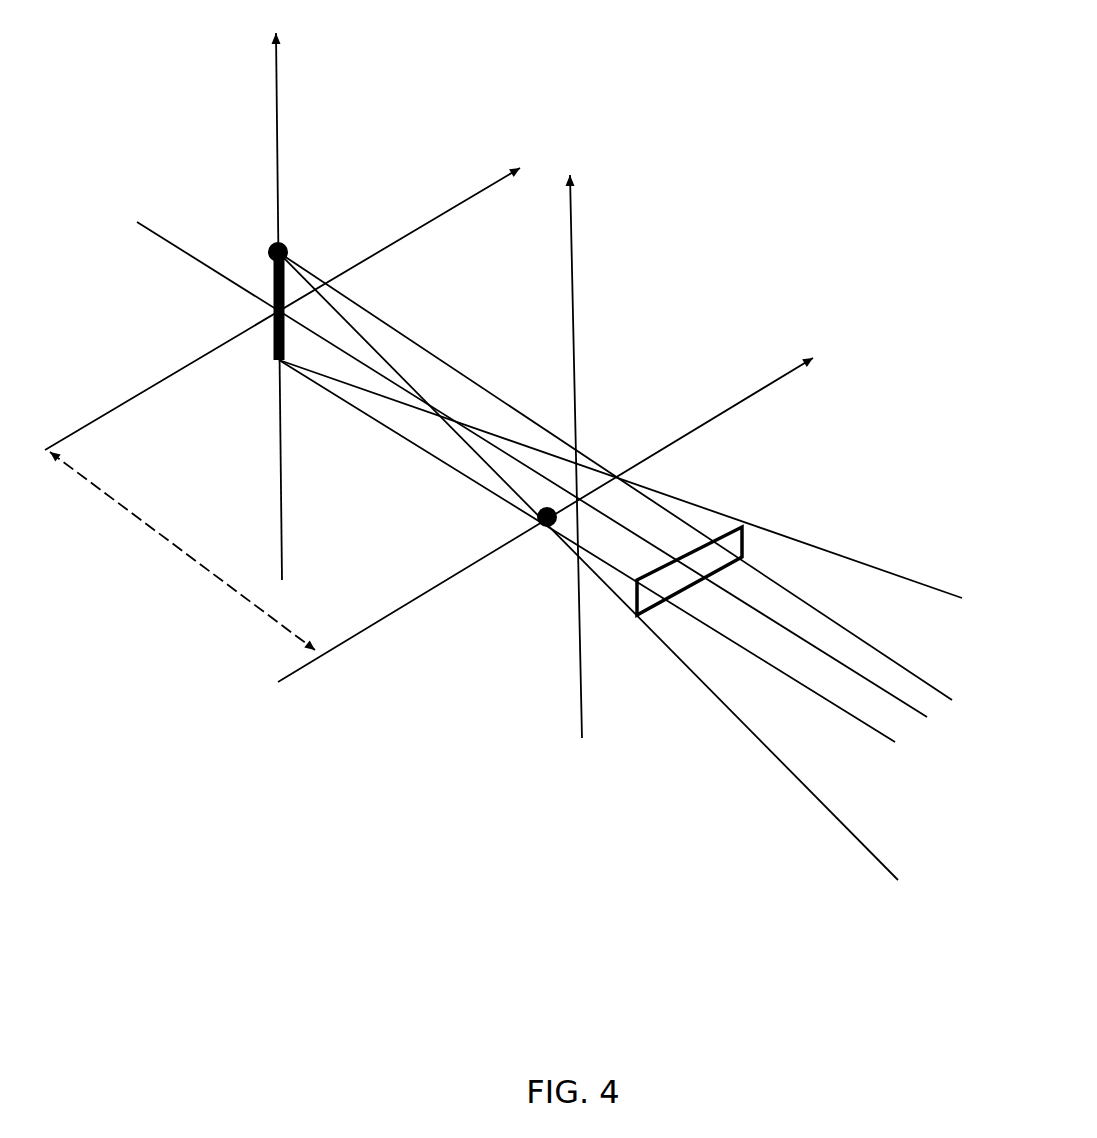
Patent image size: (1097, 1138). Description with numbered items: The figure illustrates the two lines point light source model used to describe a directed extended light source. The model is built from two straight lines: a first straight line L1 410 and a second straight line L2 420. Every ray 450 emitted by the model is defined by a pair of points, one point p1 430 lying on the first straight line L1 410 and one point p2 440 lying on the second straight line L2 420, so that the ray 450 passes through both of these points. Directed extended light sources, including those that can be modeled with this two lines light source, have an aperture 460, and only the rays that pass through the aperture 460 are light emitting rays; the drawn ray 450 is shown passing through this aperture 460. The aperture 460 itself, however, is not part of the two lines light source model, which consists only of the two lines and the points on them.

The first straight line L1 410 is at (275, 80).
The second straight line L2 420 is at (363, 627).
The point p1 430 is at (265, 245).
The point p2 440 is at (542, 533).
The ray 450 is at (760, 740).
The aperture 460 is at (741, 532).